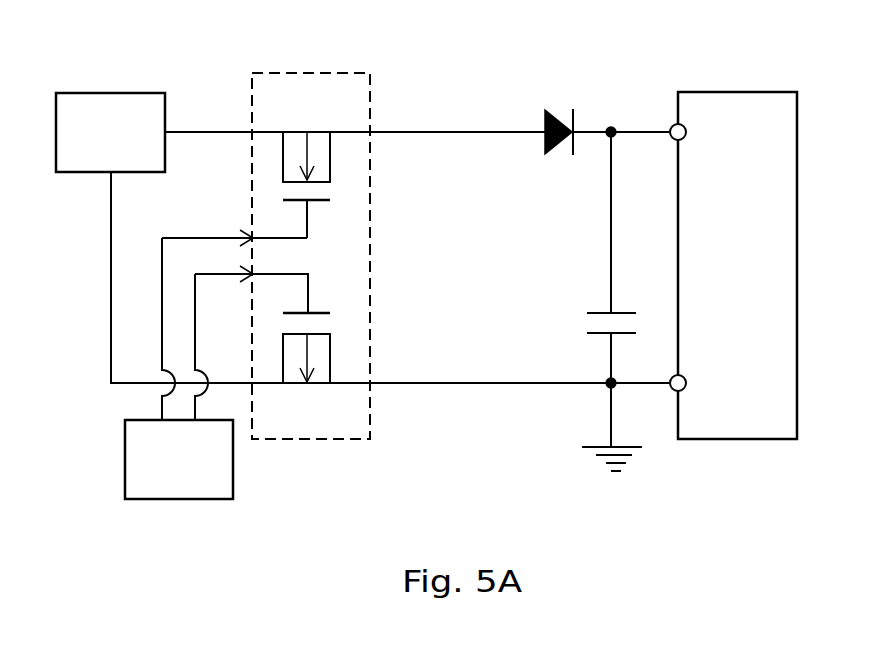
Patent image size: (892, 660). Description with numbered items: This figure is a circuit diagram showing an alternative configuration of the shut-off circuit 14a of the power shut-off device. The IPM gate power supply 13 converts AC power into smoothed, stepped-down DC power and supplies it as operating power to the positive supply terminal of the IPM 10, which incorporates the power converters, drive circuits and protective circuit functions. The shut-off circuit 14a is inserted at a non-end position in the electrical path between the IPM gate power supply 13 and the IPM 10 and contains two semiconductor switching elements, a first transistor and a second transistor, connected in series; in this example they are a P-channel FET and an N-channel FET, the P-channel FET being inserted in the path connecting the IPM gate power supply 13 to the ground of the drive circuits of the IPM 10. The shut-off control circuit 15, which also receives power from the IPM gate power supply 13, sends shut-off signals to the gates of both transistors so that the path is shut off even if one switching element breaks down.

The IPM 10 is at (723, 92).
The IPM gate power supply 13 is at (132, 92).
The shut-off circuit 14a is at (328, 70).
The shut-off control circuit 15 is at (190, 500).